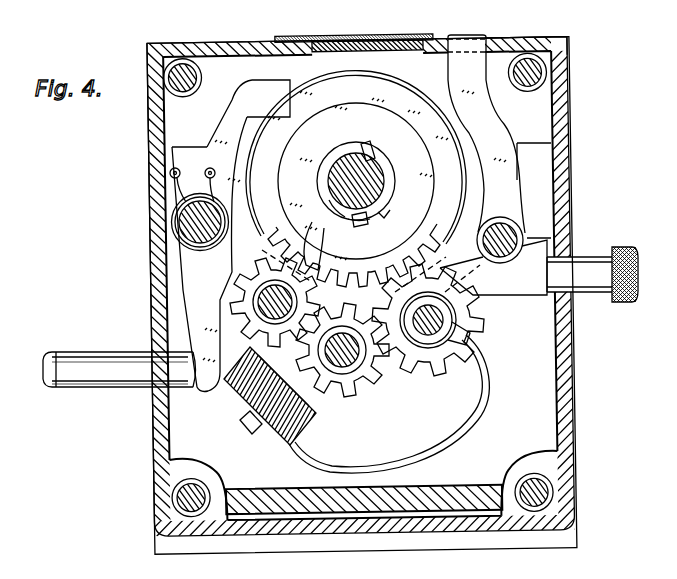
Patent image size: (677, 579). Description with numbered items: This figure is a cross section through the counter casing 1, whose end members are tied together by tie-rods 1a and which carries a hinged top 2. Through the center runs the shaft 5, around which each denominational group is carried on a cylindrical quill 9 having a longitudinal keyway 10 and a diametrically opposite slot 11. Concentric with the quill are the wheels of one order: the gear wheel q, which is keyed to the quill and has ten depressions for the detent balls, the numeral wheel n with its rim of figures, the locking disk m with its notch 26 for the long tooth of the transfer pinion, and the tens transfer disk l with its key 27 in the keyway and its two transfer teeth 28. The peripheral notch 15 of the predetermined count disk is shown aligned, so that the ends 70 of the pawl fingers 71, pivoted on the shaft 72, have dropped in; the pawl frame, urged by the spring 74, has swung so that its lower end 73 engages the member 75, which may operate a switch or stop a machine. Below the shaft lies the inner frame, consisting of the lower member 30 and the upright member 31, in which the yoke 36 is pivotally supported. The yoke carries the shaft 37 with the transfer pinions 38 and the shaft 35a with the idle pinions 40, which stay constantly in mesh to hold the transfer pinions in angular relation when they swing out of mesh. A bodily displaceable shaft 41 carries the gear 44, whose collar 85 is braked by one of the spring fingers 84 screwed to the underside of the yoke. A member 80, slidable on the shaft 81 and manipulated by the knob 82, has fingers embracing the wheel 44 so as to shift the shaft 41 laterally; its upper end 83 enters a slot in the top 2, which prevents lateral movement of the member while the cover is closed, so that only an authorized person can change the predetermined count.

The casing 1 is at (546, 118).
The tie-rods 1a is at (165, 67).
The hinged top 2 is at (532, 42).
The shaft 5 is at (384, 176).
The quill 9 is at (378, 212).
The keyway 10 is at (366, 232).
The slot 11 is at (358, 143).
The notch 15 is at (294, 92).
The notch 26 is at (324, 236).
The key 27 is at (330, 195).
The transfer teeth 28 is at (350, 228).
The lower member 30 is at (299, 506).
The upright member 31 is at (538, 158).
The shaft 35a is at (346, 374).
The yoke 36 is at (302, 435).
The shaft 37 is at (258, 301).
The transfer pinions 38 is at (237, 278).
The idle pinions 40 is at (364, 392).
The shaft 41 is at (456, 326).
The gear 44 is at (483, 340).
The ends of pawl fingers 70 is at (287, 82).
The pawl fingers 71 is at (213, 133).
The shaft 72 is at (195, 230).
The lower end of pawl frame 73 is at (200, 333).
The spring 74 is at (178, 188).
The member 75 is at (110, 382).
The member 80 is at (507, 188).
The shaft 81 is at (512, 235).
The knob 82 is at (638, 276).
The upper end 83 is at (462, 58).
The spring fingers 84 is at (440, 445).
The collars 85 is at (473, 352).
The tens transfer disk l is at (326, 76).
The locking disk m is at (358, 77).
The numeral wheel n is at (377, 80).
The gear wheel q is at (427, 240).